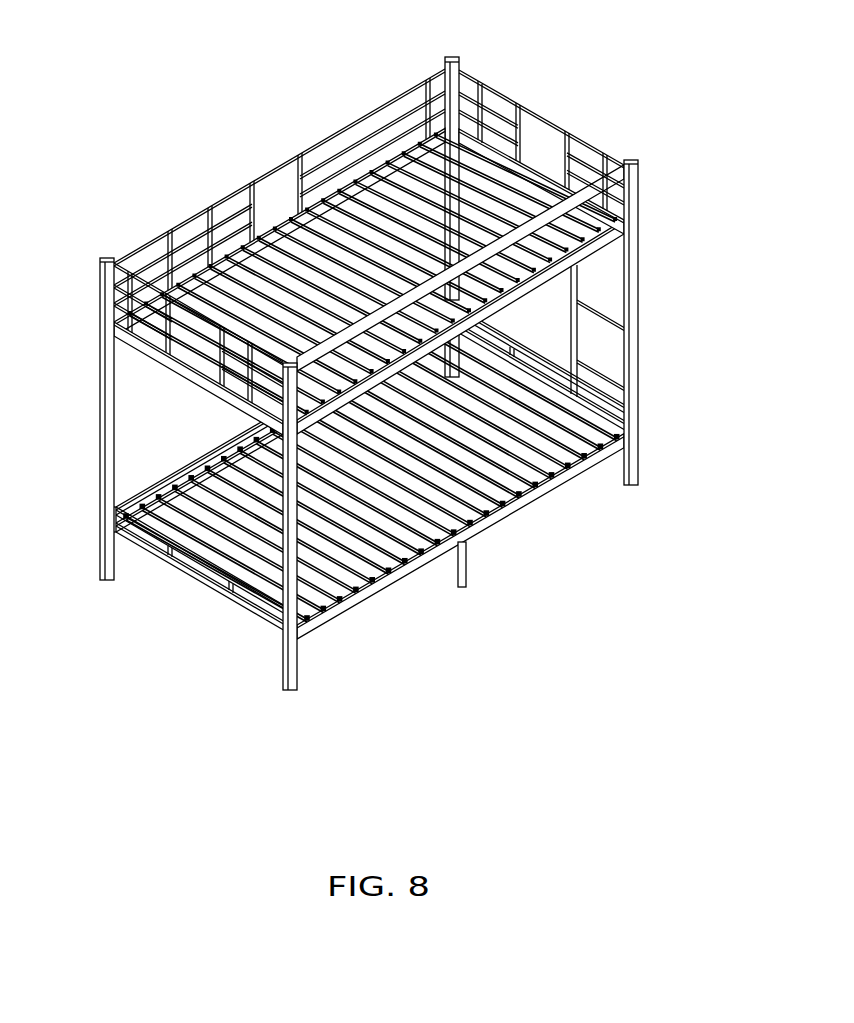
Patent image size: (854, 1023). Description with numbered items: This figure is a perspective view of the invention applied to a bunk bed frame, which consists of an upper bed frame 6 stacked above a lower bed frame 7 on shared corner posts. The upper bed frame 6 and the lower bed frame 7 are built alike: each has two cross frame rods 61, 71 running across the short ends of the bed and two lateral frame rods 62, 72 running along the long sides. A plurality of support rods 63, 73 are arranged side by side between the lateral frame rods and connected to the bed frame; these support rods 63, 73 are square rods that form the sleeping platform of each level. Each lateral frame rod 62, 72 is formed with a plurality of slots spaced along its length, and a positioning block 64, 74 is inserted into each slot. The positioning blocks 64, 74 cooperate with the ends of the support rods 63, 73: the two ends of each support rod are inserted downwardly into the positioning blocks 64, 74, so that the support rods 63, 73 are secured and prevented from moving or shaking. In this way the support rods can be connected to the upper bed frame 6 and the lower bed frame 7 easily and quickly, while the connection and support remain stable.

The upper bed frame 6 is at (416, 348).
The cross frame rod 61 is at (563, 177).
The lateral frame rod 62 is at (349, 174).
The support rod 63 is at (463, 143).
The positioning block 64 is at (207, 270).
The lower bed frame 7 is at (387, 492).
The cross frame rod 71 is at (187, 578).
The lateral frame rod 72 is at (170, 487).
The support rod 73 is at (350, 575).
The positioning block 74 is at (195, 478).